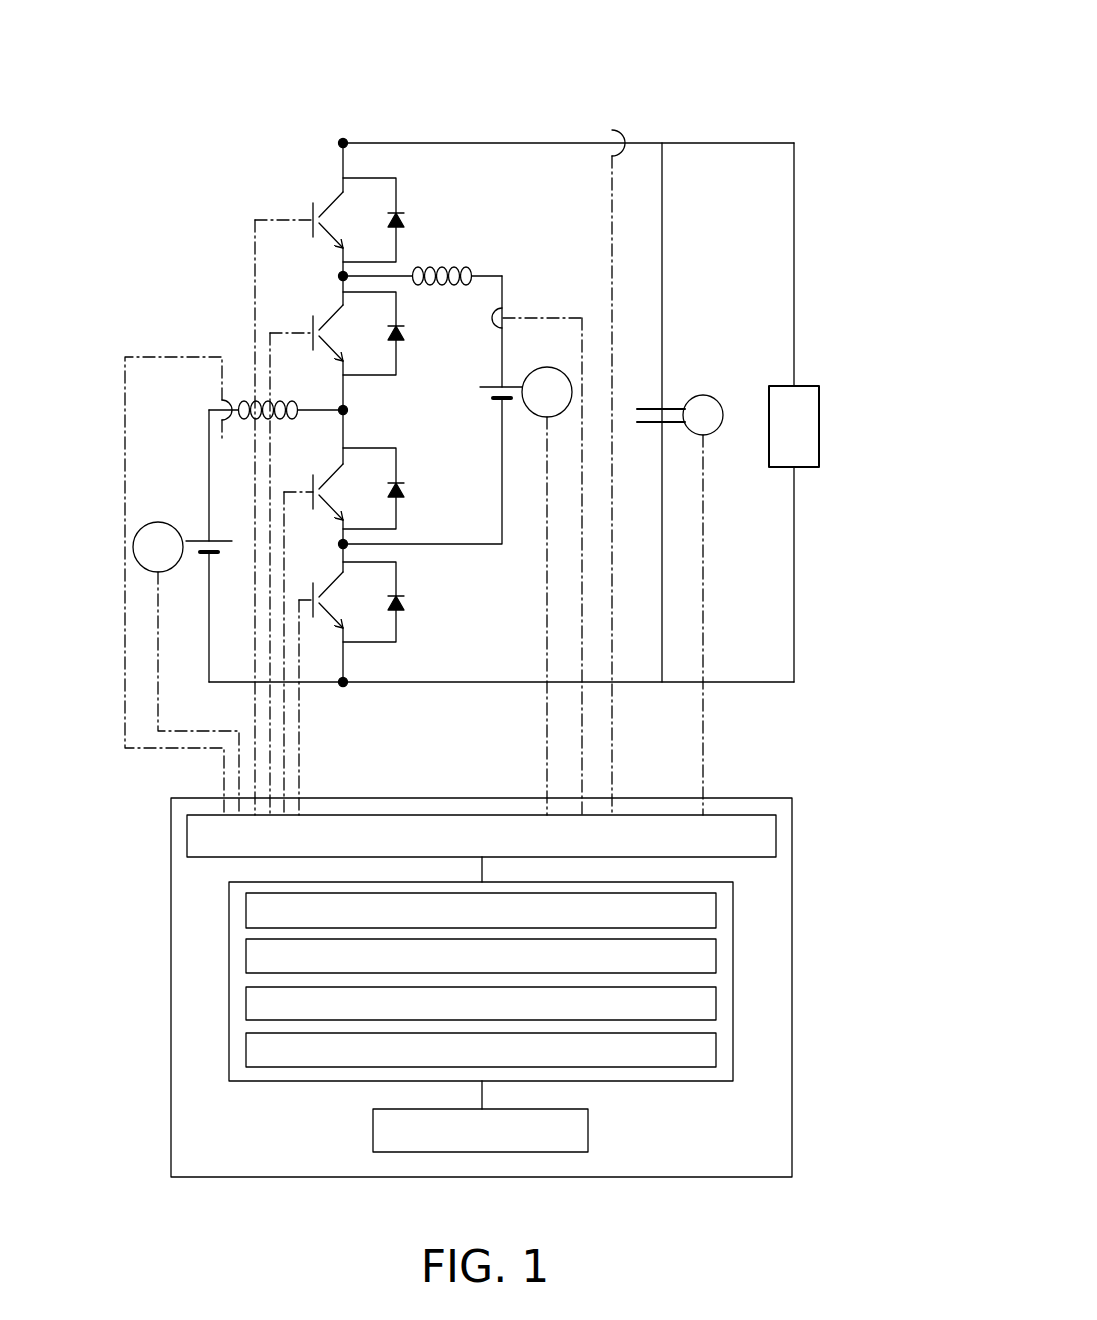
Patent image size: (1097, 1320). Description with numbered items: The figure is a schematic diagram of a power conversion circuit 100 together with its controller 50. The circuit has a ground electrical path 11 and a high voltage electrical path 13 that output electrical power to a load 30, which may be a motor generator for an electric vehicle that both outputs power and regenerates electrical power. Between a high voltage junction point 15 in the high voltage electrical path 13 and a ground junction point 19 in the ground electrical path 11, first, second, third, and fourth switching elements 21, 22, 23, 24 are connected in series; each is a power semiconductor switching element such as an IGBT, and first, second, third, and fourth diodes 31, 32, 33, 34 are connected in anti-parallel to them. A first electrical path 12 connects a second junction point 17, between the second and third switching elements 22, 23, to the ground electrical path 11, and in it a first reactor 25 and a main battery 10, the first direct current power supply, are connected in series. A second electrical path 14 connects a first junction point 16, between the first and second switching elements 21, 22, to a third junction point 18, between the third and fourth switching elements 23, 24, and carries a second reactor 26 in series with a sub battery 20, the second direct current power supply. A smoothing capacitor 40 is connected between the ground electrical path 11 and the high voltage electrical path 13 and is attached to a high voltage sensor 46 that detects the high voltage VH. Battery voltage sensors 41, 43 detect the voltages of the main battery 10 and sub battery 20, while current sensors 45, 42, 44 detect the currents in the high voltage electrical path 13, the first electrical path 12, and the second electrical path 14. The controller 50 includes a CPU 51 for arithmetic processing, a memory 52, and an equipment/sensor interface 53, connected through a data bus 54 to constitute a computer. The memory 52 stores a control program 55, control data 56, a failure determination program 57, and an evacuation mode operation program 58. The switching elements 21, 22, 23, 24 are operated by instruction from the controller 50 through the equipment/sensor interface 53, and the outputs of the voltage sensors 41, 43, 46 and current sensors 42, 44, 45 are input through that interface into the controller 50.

The main battery 10 is at (209, 556).
The ground electrical path 11 is at (450, 682).
The first electrical path 12 is at (209, 458).
The high voltage electrical path 13 is at (470, 143).
The second electrical path 14 is at (502, 480).
The high voltage junction point 15 is at (343, 143).
The first junction point 16 is at (343, 276).
The second junction point 17 is at (343, 410).
The third junction point 18 is at (343, 544).
The ground junction point 19 is at (343, 688).
The sub battery 20 is at (493, 387).
The first switching element 21 is at (313, 218).
The second switching element 22 is at (313, 331).
The third switching element 23 is at (313, 490).
The fourth switching element 24 is at (313, 603).
The first reactor 25 is at (221, 395).
The second reactor 26 is at (460, 268).
The load 30 is at (819, 395).
The first diode 31 is at (404, 222).
The second diode 32 is at (404, 336).
The third diode 33 is at (404, 492).
The fourth diode 34 is at (404, 604).
The smoothing capacitor 40 is at (664, 409).
The battery voltage sensor 41 is at (140, 530).
The current sensor 42 is at (225, 440).
The battery voltage sensor 43 is at (547, 367).
The current sensor 44 is at (508, 318).
The current sensor 45 is at (614, 130).
The high voltage sensor 46 is at (716, 400).
The controller 50 is at (792, 930).
The CPU 51 is at (588, 1130).
The memory 52 is at (697, 1081).
The equipment/sensor interface 53 is at (776, 838).
The data bus 54 is at (482, 1093).
The control program 55 is at (716, 1052).
The control data 56 is at (716, 1006).
The failure determination program 57 is at (716, 958).
The evacuation mode operation program 58 is at (716, 912).
The power conversion circuit 100 is at (740, 85).